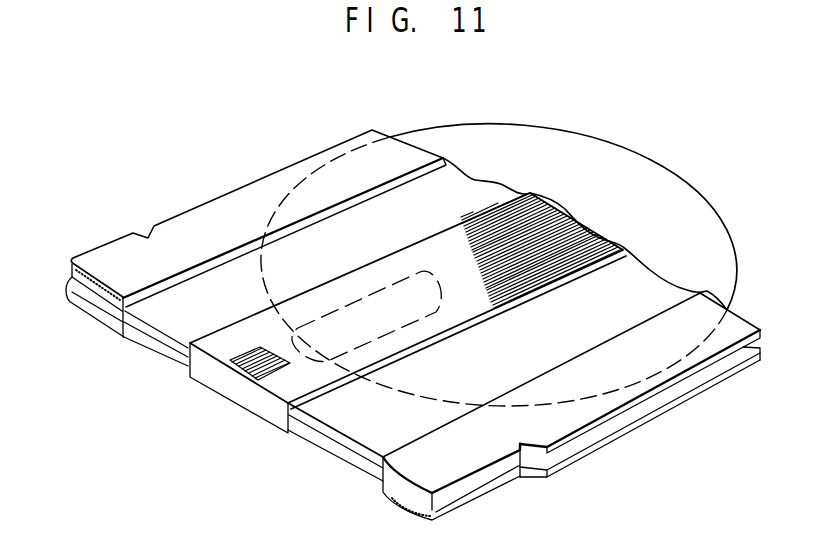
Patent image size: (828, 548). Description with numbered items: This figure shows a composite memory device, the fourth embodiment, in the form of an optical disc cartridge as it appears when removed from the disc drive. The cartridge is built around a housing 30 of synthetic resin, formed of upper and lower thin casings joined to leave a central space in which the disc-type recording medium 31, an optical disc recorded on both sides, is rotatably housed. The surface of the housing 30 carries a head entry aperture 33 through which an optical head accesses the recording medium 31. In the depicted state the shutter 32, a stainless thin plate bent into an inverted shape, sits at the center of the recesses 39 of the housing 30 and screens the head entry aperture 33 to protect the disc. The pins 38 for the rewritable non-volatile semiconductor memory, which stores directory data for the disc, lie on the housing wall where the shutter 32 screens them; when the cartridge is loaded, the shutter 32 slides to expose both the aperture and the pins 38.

The housing 30 is at (222, 207).
The disc-type recording medium 31 is at (650, 171).
The shutter 32 is at (268, 410).
The head entry aperture 33 is at (390, 337).
The pins 38 is at (227, 373).
The recesses 39 is at (173, 313).